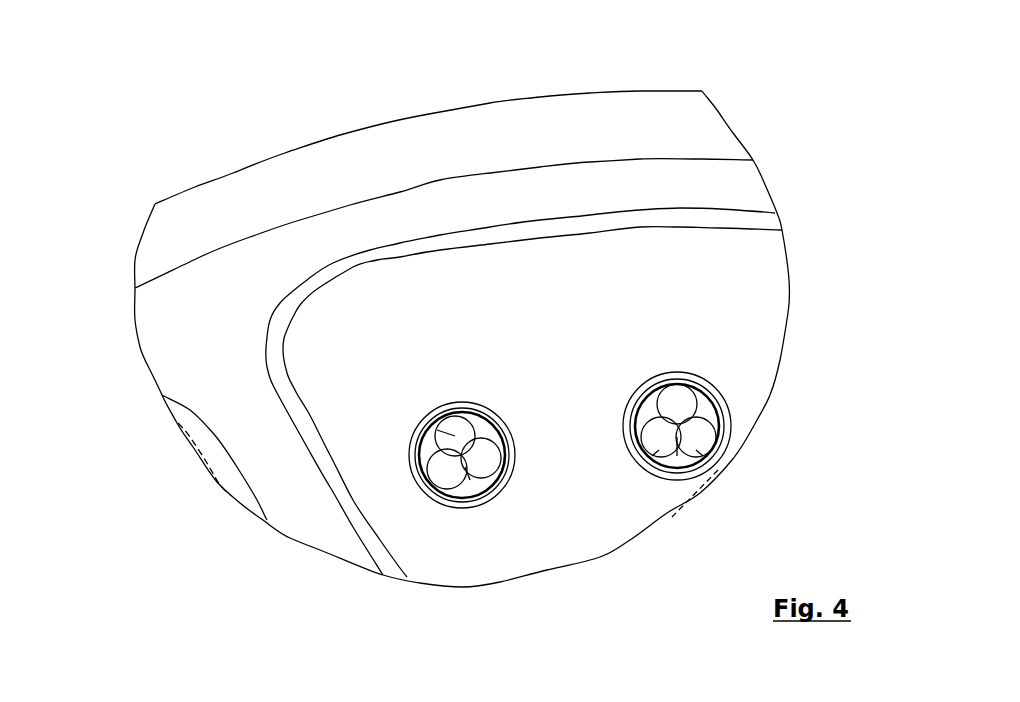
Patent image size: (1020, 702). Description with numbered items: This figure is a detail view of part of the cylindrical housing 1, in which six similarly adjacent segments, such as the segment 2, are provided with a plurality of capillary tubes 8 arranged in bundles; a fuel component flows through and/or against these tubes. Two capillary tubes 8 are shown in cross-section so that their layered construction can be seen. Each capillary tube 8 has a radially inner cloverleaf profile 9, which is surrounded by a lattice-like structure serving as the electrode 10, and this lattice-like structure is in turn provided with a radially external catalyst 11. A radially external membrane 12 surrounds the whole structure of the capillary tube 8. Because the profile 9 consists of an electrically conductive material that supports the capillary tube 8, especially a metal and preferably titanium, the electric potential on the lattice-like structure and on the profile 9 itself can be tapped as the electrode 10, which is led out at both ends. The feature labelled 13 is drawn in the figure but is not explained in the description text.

The cylindrical housing 1 is at (198, 227).
The segment 2 is at (574, 196).
The crown band 13 is at (695, 217).
The capillary tube 8 is at (743, 396).
The cloverleaf profile 9 is at (705, 437).
The electrode 10 is at (697, 460).
The catalyst 11 is at (682, 473).
The membrane 12 is at (658, 472).